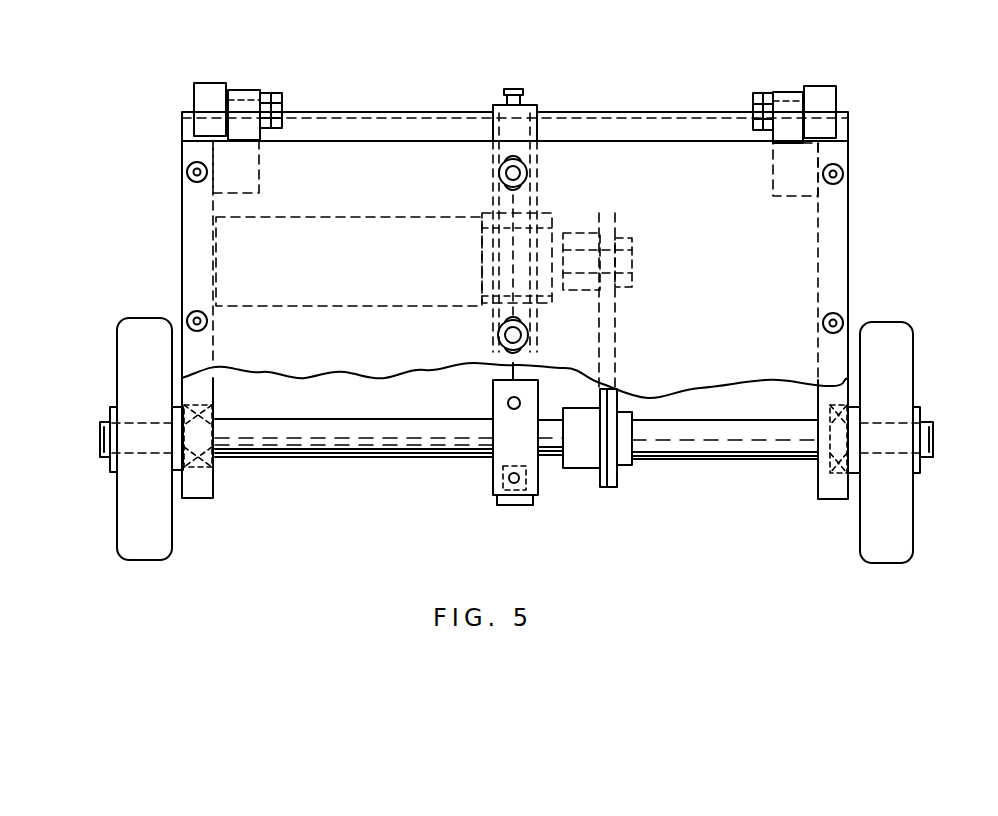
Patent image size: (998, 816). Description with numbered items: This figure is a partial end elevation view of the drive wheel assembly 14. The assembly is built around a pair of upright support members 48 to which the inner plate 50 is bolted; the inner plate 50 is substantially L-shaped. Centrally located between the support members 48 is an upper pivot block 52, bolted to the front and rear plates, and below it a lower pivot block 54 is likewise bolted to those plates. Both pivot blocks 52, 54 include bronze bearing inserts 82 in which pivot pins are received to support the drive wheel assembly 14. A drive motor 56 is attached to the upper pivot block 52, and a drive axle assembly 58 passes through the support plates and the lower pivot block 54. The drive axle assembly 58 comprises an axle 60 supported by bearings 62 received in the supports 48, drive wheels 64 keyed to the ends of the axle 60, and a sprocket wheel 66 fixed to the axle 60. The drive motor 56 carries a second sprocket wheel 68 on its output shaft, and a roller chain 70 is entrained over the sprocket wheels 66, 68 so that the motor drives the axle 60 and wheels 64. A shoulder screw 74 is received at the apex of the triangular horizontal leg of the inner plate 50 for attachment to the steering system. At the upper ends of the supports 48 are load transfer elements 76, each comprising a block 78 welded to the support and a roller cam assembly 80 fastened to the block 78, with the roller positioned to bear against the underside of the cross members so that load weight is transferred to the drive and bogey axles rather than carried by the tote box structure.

The drive wheel assembly 14 is at (855, 260).
The upright support members 48 is at (182, 205).
The inner plate 50 is at (515, 354).
The upper pivot block 52 is at (532, 195).
The lower pivot block 54 is at (490, 465).
The drive motor 56 is at (387, 305).
The drive axle assembly 58 is at (367, 460).
The axle 60 is at (750, 460).
The bearings 62 is at (197, 417).
The drive wheels 64 is at (172, 517).
The sprocket wheel 66 is at (580, 470).
The sprocket wheel 68 is at (632, 240).
The roller chain 70 is at (622, 396).
The shoulder screw 74 is at (522, 88).
The load transfer elements 76 is at (212, 82).
The block 78 is at (245, 90).
The roller cam assembly 80 is at (195, 100).
The bronze bearing inserts 82 is at (537, 110).